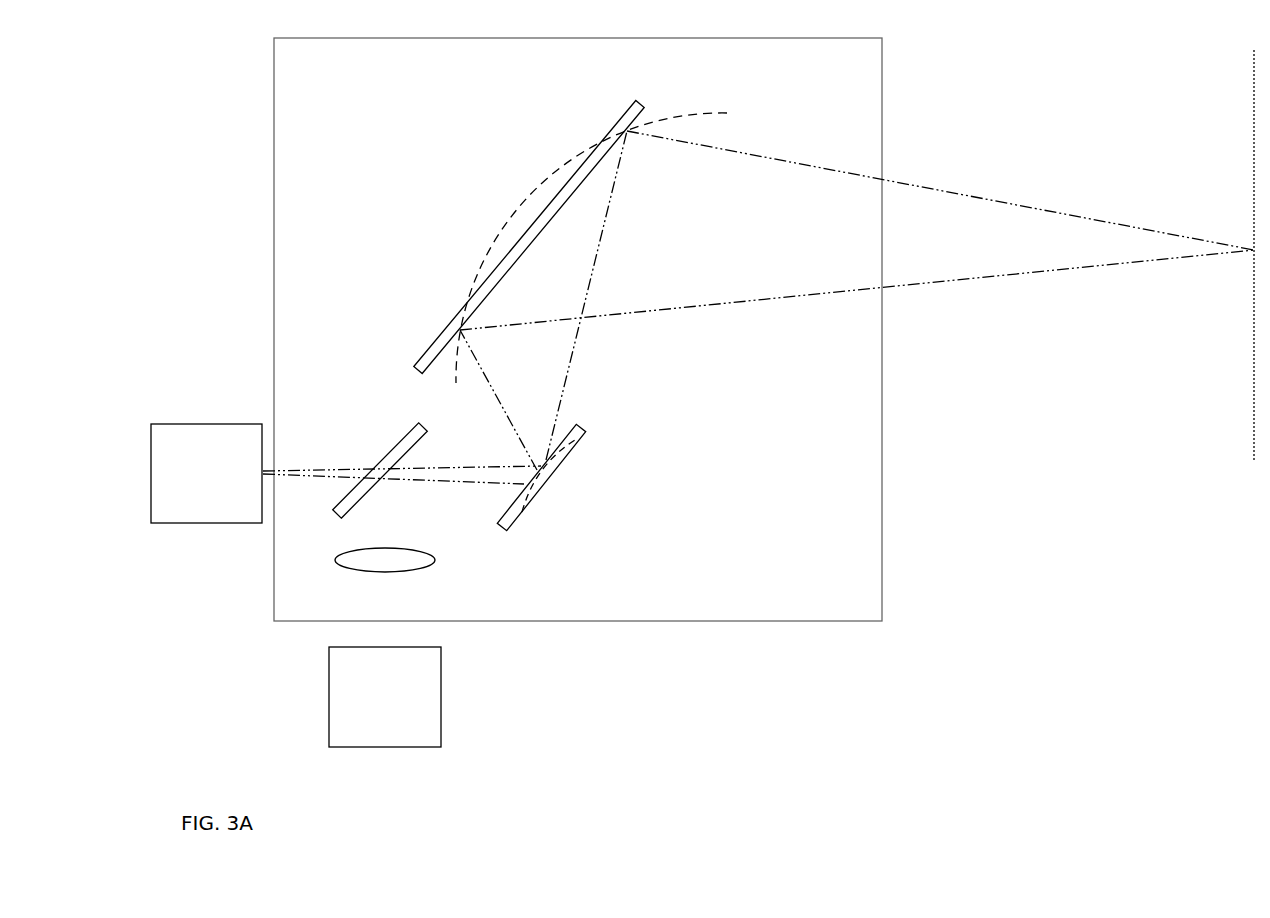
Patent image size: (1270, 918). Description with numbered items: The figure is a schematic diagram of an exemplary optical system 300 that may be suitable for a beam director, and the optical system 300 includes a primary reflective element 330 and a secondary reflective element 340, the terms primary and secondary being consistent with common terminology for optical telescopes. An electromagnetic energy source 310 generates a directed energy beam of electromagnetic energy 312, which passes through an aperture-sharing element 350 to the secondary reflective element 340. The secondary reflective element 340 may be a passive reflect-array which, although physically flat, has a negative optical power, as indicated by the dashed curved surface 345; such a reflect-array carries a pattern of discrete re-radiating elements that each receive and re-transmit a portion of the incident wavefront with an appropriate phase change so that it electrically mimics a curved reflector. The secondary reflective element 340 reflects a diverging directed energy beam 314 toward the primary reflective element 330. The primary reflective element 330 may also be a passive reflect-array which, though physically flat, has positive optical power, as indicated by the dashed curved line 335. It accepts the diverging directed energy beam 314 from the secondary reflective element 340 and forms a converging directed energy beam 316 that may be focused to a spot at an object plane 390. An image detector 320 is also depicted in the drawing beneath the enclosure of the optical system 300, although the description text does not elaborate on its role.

The optical system 300 is at (880, 498).
The electromagnetic energy source 310 is at (206, 473).
The directed energy beam of electromagnetic energy 312 is at (428, 482).
The diverging directed energy beam 314 is at (568, 360).
The converging directed energy beam 316 is at (932, 192).
The image detector 320 is at (385, 697).
The primary reflective element 330 is at (613, 128).
The dashed curved line 335 is at (510, 225).
The secondary reflective element 340 is at (580, 425).
The dashed curved surface 345 is at (522, 531).
The aperture-sharing element 350 is at (413, 428).
The object plane 390 is at (1254, 84).